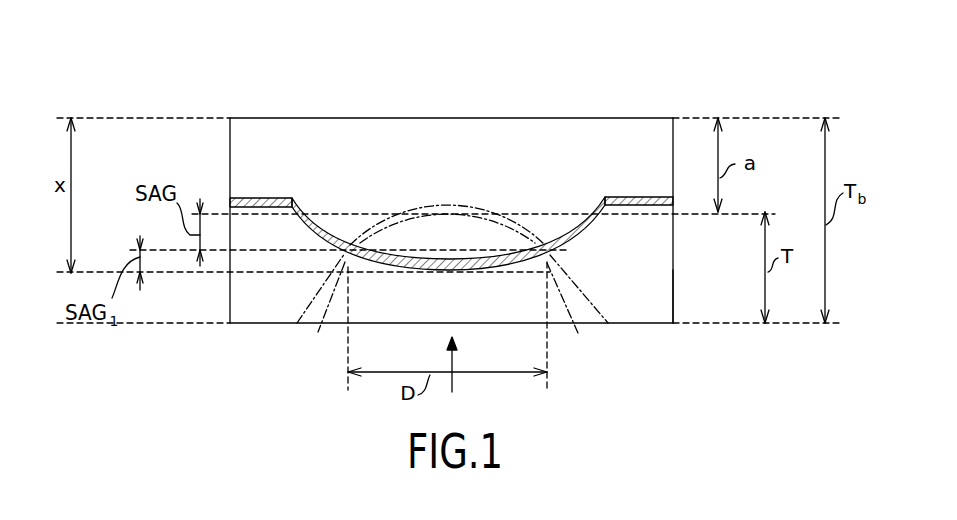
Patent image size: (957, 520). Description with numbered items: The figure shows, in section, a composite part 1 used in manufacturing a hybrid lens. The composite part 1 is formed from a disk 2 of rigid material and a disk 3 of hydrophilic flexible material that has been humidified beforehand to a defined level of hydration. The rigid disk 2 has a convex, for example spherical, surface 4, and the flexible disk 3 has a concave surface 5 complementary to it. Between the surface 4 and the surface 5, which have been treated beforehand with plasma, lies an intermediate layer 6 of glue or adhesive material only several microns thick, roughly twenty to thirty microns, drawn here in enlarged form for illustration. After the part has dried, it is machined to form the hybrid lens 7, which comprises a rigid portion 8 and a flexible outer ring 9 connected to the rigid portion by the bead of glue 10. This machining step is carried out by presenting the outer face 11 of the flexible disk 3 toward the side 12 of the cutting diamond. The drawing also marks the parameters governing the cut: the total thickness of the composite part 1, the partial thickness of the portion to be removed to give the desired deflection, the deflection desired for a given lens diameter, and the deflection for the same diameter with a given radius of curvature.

The composite part 1 is at (679, 100).
The disk made of rigid material 2 is at (278, 147).
The disk made of hydrophilic flexible material 3 is at (648, 293).
The convex surface 4 is at (450, 263).
The concave surface 5 is at (400, 268).
The intermediate layer of glue 6 is at (637, 195).
The hybrid lens 7 is at (369, 225).
The rigid portion 8 is at (492, 215).
The flexible outer ring 9 is at (447, 312).
The bead of glue 10 is at (545, 245).
The outer face of the flexible disk 11 is at (282, 330).
The side of the cutting diamond 12 is at (455, 383).